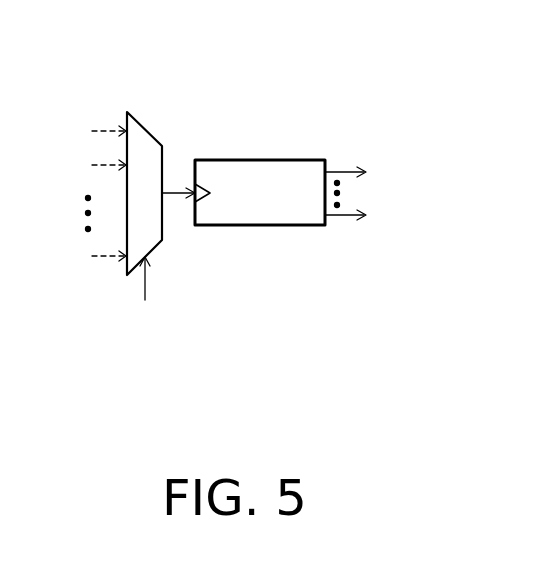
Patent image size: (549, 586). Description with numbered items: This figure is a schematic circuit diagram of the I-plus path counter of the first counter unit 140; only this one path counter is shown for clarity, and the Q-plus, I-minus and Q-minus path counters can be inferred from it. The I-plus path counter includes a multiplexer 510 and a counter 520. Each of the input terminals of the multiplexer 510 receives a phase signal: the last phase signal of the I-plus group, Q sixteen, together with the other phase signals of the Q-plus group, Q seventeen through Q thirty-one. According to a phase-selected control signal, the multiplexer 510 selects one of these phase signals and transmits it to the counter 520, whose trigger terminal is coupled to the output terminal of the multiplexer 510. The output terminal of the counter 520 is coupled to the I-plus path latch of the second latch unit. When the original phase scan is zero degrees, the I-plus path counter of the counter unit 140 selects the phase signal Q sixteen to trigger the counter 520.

The first counter unit 140 is at (460, 380).
The multiplexer 510 is at (145, 123).
The counter 520 is at (260, 160).